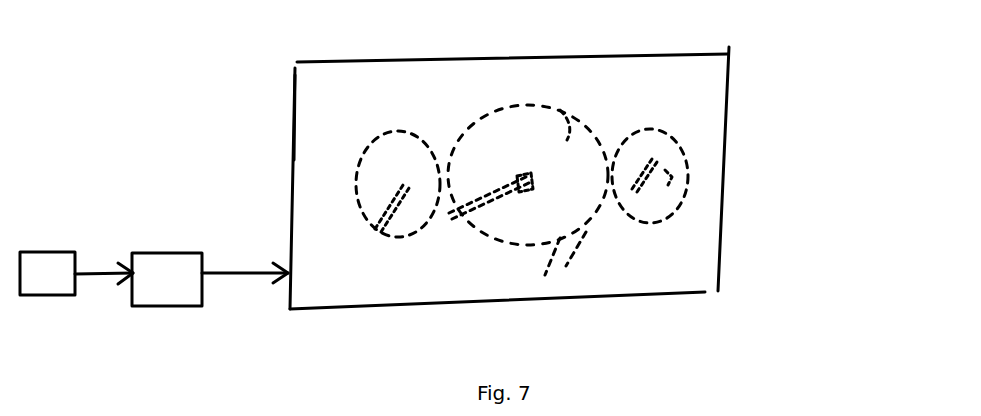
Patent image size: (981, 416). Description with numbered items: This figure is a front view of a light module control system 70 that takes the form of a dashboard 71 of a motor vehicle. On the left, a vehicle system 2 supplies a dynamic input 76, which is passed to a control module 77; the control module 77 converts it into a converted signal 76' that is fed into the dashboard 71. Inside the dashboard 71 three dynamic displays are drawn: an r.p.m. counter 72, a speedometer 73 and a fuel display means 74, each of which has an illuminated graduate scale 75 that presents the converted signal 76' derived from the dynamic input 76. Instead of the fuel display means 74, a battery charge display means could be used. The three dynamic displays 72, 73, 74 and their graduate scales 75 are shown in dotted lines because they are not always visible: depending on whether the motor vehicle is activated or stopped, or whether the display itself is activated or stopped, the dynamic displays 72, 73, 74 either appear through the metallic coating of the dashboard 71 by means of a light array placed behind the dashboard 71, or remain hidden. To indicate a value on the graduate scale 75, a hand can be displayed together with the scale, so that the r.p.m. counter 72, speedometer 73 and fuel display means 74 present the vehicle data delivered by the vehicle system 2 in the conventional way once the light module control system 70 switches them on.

The vehicle system 2 is at (54, 230).
The light module control system 70 is at (608, 178).
The dashboard 71 is at (237, 117).
The r.p.m. counter 72 is at (300, 184).
The speedometer 73 is at (696, 98).
The fuel display means 74 is at (747, 155).
The graduate scale 75 is at (507, 153).
The dynamic input 76 is at (449, 286).
The converted signal 76' is at (262, 315).
The control module 77 is at (183, 311).